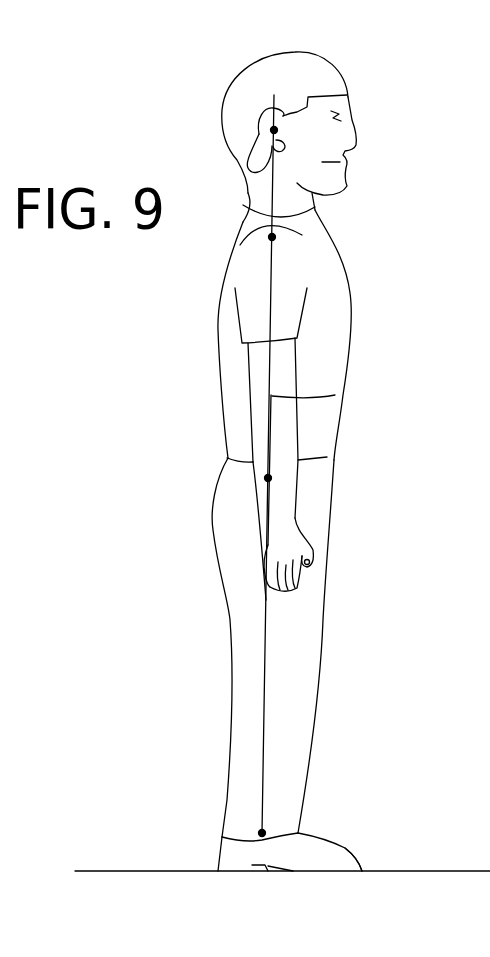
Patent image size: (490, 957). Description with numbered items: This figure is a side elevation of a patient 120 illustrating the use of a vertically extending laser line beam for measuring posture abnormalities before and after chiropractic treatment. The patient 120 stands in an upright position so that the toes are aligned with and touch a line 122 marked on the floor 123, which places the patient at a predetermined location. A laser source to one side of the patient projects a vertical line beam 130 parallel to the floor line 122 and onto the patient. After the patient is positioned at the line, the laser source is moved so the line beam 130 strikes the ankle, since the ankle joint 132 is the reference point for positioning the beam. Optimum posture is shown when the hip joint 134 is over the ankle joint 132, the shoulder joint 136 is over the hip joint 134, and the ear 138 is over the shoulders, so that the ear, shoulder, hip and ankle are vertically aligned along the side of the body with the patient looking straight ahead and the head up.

The patient 120 is at (350, 285).
The line on the floor 122 is at (362, 868).
The floor 123 is at (465, 871).
The vertical line beam 130 is at (335, 395).
The ankle joint 132 is at (262, 833).
The hip joint 134 is at (268, 478).
The shoulder joint 136 is at (272, 238).
The ear 138 is at (274, 130).